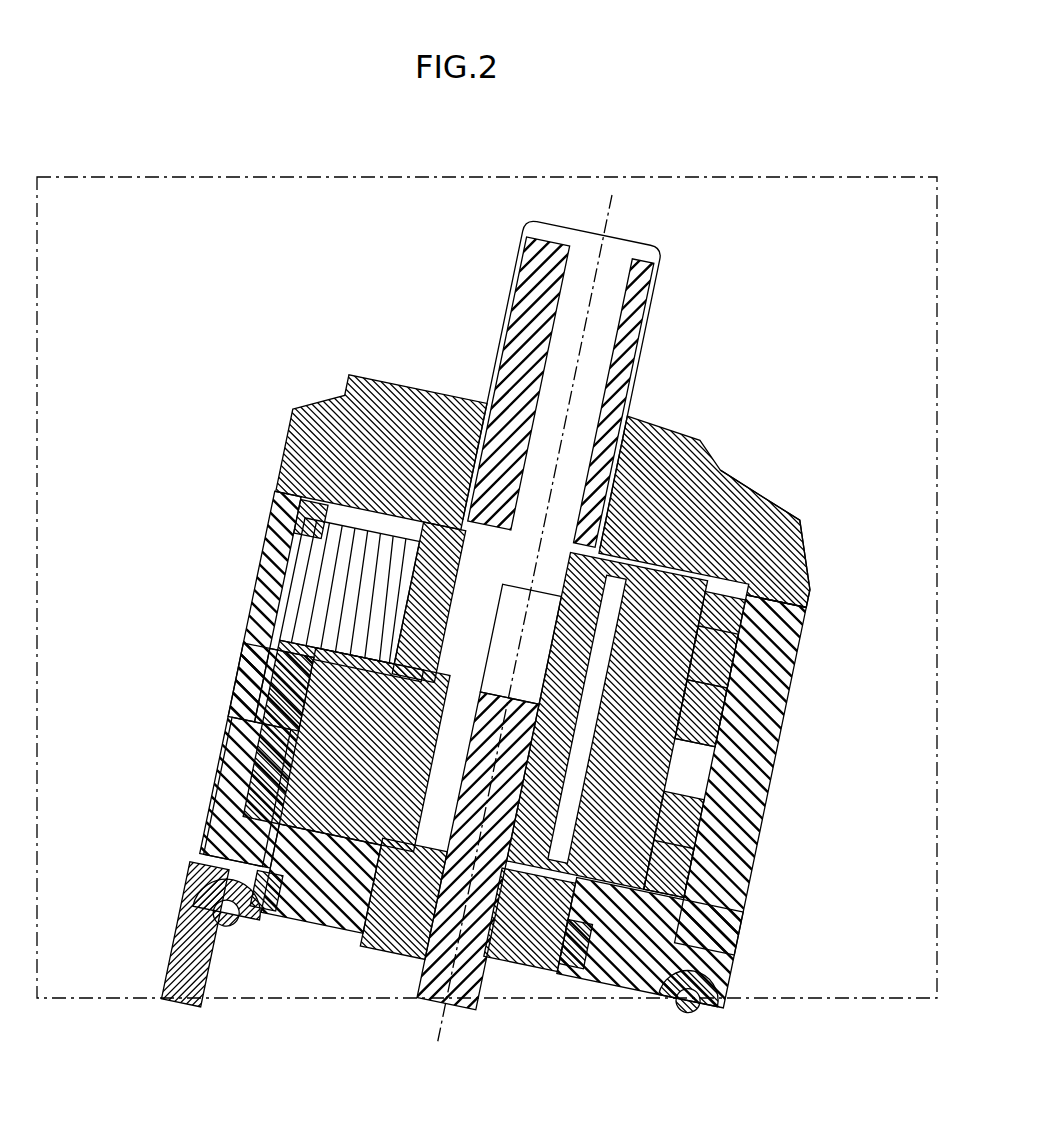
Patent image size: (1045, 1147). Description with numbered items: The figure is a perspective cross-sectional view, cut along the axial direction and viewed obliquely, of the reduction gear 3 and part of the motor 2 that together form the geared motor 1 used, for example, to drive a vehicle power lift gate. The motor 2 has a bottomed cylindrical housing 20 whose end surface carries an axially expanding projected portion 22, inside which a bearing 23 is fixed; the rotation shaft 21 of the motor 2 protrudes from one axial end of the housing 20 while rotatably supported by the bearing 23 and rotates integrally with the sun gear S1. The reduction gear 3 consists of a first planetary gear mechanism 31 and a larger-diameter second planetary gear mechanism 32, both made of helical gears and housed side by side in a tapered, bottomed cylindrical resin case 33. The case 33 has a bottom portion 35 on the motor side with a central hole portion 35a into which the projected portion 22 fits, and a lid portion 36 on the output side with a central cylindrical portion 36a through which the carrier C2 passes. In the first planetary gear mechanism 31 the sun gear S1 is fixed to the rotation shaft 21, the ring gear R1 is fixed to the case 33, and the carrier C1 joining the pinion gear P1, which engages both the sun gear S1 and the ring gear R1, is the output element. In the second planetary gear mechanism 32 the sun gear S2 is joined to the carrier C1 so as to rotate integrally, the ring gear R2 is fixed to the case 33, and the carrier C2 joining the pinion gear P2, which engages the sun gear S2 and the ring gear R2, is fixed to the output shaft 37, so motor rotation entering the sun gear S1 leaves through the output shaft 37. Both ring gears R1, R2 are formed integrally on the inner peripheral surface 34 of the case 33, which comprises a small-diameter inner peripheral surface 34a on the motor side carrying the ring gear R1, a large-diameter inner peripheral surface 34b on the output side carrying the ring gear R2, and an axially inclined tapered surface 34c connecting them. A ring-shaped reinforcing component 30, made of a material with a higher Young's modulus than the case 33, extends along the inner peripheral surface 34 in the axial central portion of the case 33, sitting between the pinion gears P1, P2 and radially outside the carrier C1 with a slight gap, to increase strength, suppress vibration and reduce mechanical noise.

The geared motor 1 is at (240, 307).
The motor 2 is at (150, 880).
The reduction gear 3 is at (175, 487).
The housing 20 is at (176, 956).
The rotation shaft 21 is at (449, 997).
The projected portion 22 is at (532, 902).
The bearing 23 is at (386, 947).
The reinforcing component 30 is at (712, 752).
The first planetary gear mechanism 31 is at (755, 812).
The second planetary gear mechanism 32 is at (255, 580).
The case 33 is at (240, 636).
The inner peripheral surface 34 is at (160, 660).
The small-diameter inner peripheral surface 34a is at (275, 802).
The large-diameter inner peripheral surface 34b is at (275, 702).
The tapered surface 34c is at (285, 737).
The bottom portion 35 is at (690, 968).
The hole portion 35a is at (375, 913).
The lid portion 36 is at (400, 402).
The cylindrical portion 36a is at (705, 493).
The output shaft 37 is at (666, 276).
The ring gear R1 is at (261, 906).
The ring gear R2 is at (275, 556).
The sun gear S1 is at (578, 942).
The sun gear S2 is at (690, 628).
The carrier C1 is at (735, 840).
The carrier C2 is at (760, 667).
The pinion gear P1 is at (715, 876).
The pinion gear P2 is at (755, 697).